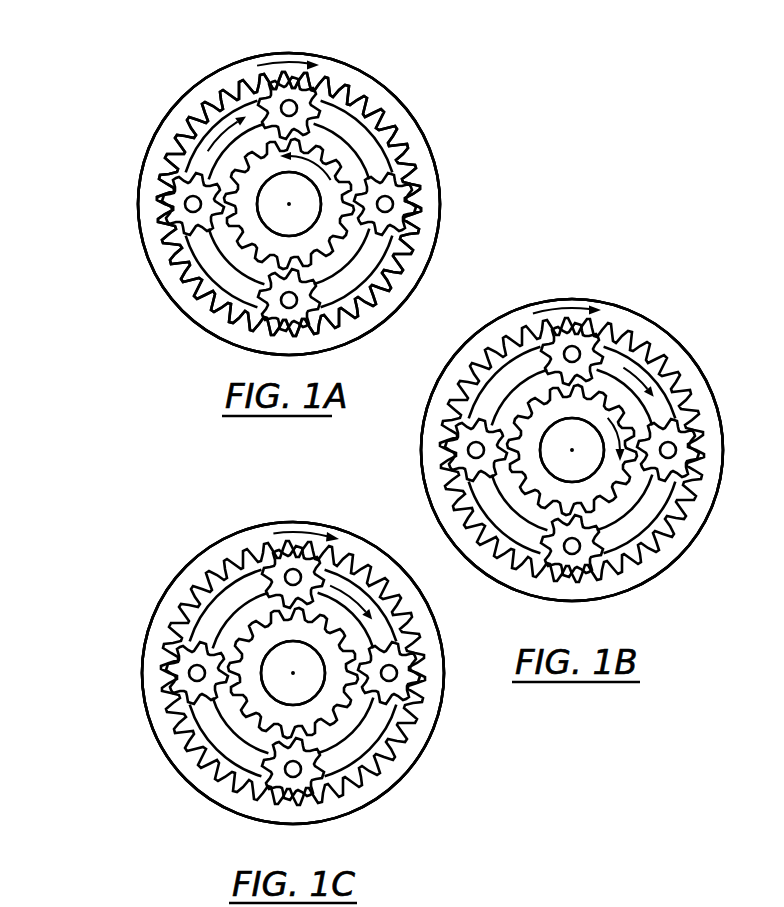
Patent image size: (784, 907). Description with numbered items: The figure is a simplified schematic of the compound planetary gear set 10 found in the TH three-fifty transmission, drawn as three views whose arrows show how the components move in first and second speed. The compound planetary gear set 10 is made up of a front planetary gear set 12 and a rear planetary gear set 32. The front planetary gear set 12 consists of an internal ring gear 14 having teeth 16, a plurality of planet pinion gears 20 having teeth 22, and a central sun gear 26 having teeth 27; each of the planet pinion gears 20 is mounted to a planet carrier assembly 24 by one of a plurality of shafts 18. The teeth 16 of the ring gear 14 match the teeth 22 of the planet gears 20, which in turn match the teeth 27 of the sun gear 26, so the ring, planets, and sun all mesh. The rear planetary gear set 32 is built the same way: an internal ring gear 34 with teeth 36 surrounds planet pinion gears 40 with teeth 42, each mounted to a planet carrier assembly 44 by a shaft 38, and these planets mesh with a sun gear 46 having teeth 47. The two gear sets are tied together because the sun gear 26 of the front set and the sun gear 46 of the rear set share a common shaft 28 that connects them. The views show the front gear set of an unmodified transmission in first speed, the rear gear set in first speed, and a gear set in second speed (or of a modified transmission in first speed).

In FIG. 1A, the compound planetary gear set 10 is at (444, 73).
In FIG. 1B, the compound planetary gear set 10 is at (698, 238).
In FIG. 1C, the compound planetary gear set 10 is at (140, 576).
In FIG. 1A, the front planetary gear set 12 is at (138, 121).
In FIG. 1C, the front planetary gear set 12 is at (138, 617).
In FIG. 1A, the internal ring gear 14 is at (200, 84).
In FIG. 1C, the internal ring gear 14 is at (193, 780).
In FIG. 1A, the teeth 16 is at (228, 97).
In FIG. 1A, the shafts 18 is at (186, 206).
In FIG. 1C, the shafts 18 is at (285, 577).
In FIG. 1A, the planet pinion gears 20 is at (308, 85).
In FIG. 1C, the planet pinion gears 20 is at (266, 582).
In FIG. 1A, the teeth 22 is at (177, 178).
In FIG. 1C, the teeth 22 is at (183, 718).
In FIG. 1A, the planet carrier assembly 24 is at (222, 283).
In FIG. 1C, the planet carrier assembly 24 is at (364, 752).
In FIG. 1A, the sun gear 26 is at (323, 238).
In FIG. 1C, the sun gear 26 is at (322, 718).
In FIG. 1A, the teeth 27 is at (273, 223).
In FIG. 1C, the teeth 27 is at (218, 733).
In FIG. 1A, the common shaft 28 is at (258, 262).
In FIG. 1B, the common shaft 28 is at (556, 428).
In FIG. 1C, the common shaft 28 is at (318, 693).
In FIG. 1B, the rear planetary gear set 32 is at (716, 310).
In FIG. 1B, the internal ring gear 34 is at (610, 313).
In FIG. 1B, the teeth 36 is at (640, 342).
In FIG. 1B, the shaft 38 is at (565, 350).
In FIG. 1B, the planet pinion gears 40 is at (460, 472).
In FIG. 1B, the teeth 42 is at (505, 397).
In FIG. 1B, the planet carrier assembly 44 is at (618, 515).
In FIG. 1B, the sun gear 46 is at (530, 477).
In FIG. 1B, the teeth 47 is at (527, 470).